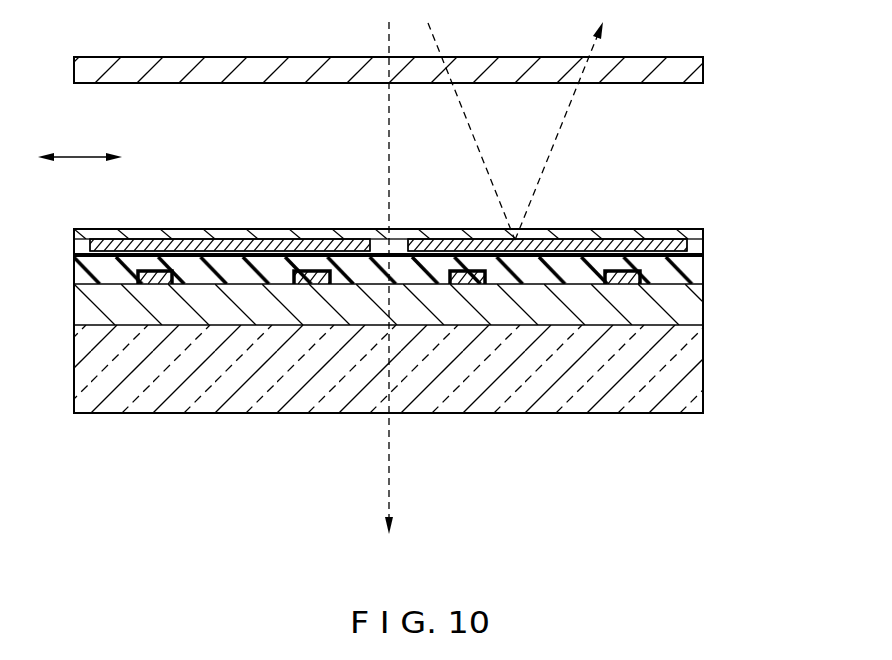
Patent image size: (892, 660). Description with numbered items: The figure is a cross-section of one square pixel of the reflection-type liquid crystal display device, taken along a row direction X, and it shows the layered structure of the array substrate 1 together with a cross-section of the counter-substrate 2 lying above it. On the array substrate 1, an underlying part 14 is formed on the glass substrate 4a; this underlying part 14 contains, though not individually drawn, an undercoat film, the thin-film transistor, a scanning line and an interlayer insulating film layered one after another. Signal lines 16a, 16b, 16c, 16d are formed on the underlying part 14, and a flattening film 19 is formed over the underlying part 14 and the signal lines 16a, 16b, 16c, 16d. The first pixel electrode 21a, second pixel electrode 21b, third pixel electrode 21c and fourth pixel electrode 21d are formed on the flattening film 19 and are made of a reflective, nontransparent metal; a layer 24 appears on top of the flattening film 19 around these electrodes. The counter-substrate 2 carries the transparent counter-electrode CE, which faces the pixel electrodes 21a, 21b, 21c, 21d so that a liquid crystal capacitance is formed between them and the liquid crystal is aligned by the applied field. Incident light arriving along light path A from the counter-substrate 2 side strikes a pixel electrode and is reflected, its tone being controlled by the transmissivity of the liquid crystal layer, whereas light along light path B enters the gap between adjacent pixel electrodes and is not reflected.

The array substrate 1 is at (773, 227).
The counter-substrate 2 is at (774, 48).
The counter-electrode CE is at (700, 72).
The row direction X is at (90, 158).
The light path A is at (432, 30).
The light path B is at (388, 37).
The glass substrate 4a is at (697, 372).
The underlying part 14 is at (695, 304).
The flattening film 19 is at (421, 363).
The insulating layer 24 is at (421, 214).
The signal line 16a is at (158, 280).
The signal line 16b is at (320, 280).
The signal line 16c is at (472, 280).
The signal line 16d is at (628, 280).
The first pixel electrode 21a is at (230, 213).
The second pixel electrode 21b is at (226, 240).
The third pixel electrode 21c is at (547, 212).
The fourth pixel electrode 21d is at (604, 240).